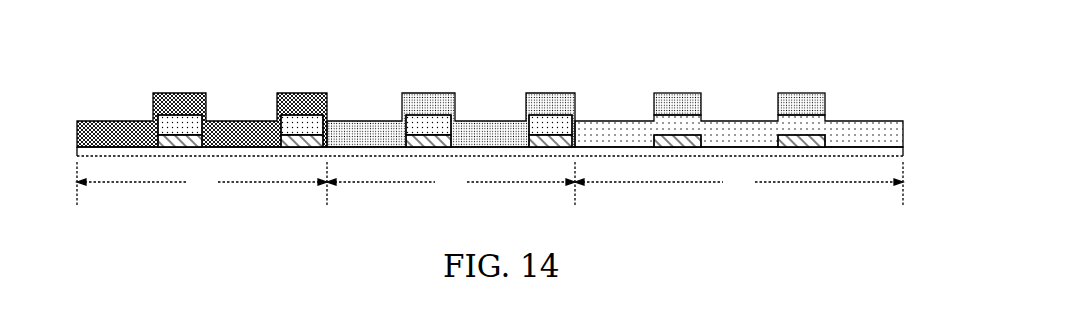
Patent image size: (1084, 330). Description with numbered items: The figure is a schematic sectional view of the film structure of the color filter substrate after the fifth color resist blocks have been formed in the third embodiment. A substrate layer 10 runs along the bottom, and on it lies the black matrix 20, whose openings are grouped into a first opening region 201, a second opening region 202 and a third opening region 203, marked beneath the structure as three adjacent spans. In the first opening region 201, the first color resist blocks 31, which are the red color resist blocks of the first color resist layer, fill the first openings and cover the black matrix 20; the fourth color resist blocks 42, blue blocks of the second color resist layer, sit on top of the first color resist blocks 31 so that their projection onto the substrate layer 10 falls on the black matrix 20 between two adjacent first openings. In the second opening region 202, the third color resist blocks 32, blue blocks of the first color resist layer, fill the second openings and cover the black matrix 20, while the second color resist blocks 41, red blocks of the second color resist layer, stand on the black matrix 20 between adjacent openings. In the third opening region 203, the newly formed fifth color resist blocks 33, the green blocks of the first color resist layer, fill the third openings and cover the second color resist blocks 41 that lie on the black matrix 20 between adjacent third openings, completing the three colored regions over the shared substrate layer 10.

The substrate layer 10 is at (848, 152).
The black matrix 20 is at (175, 142).
The first color resist blocks 31 is at (743, 133).
The third color resist blocks 32 is at (488, 133).
The fifth color resist blocks 33 is at (238, 133).
The second color resist blocks 41 is at (428, 125).
The fourth color resist blocks 42 is at (677, 103).
The first opening region 201 is at (739, 183).
The second opening region 202 is at (451, 183).
The third opening region 203 is at (202, 183).